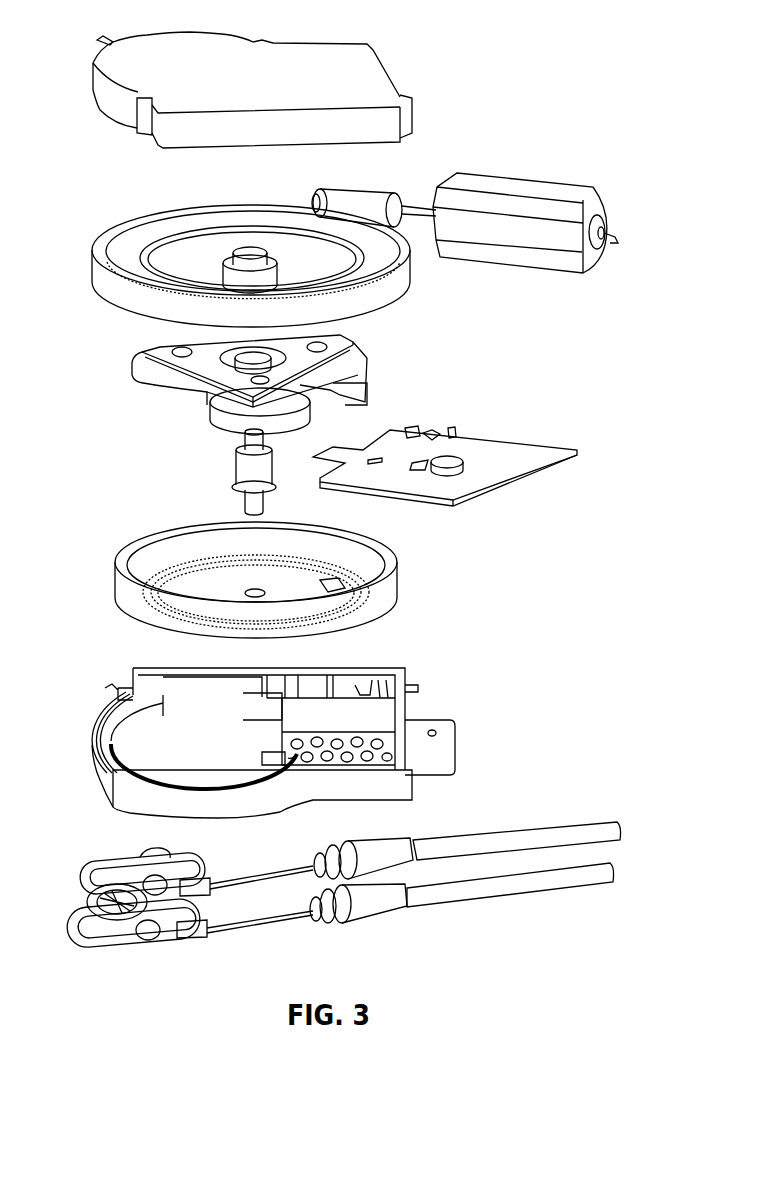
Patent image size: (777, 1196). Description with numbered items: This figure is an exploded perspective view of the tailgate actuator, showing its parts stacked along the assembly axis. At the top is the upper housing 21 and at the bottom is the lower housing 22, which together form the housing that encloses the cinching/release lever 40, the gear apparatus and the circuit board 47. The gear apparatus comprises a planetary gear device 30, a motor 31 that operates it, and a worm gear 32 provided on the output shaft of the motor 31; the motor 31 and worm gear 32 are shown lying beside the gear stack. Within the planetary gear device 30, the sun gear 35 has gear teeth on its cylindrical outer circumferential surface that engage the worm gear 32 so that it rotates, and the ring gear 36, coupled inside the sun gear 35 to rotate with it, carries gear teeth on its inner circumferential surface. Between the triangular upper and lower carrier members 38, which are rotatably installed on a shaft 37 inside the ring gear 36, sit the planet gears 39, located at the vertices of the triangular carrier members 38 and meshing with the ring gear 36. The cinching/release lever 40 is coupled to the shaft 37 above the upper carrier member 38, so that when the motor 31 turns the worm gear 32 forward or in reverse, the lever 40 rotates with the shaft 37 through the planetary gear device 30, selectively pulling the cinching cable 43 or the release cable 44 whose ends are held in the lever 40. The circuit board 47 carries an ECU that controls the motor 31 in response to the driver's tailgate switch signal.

The upper housing 21 is at (372, 66).
The lower housing 22 is at (370, 730).
The planetary gear device 30 is at (252, 379).
The motor 31 is at (558, 187).
The worm gear 32 is at (385, 195).
The sun gear 35 is at (130, 222).
The ring gear 36 is at (367, 562).
The shaft 37 is at (243, 470).
The carrier members 38 is at (140, 353).
The planet gears 39 is at (352, 348).
The cinching/release lever 40 is at (97, 860).
The cinching cable 43 is at (540, 838).
The release cable 44 is at (510, 890).
The circuit board 47 is at (497, 442).